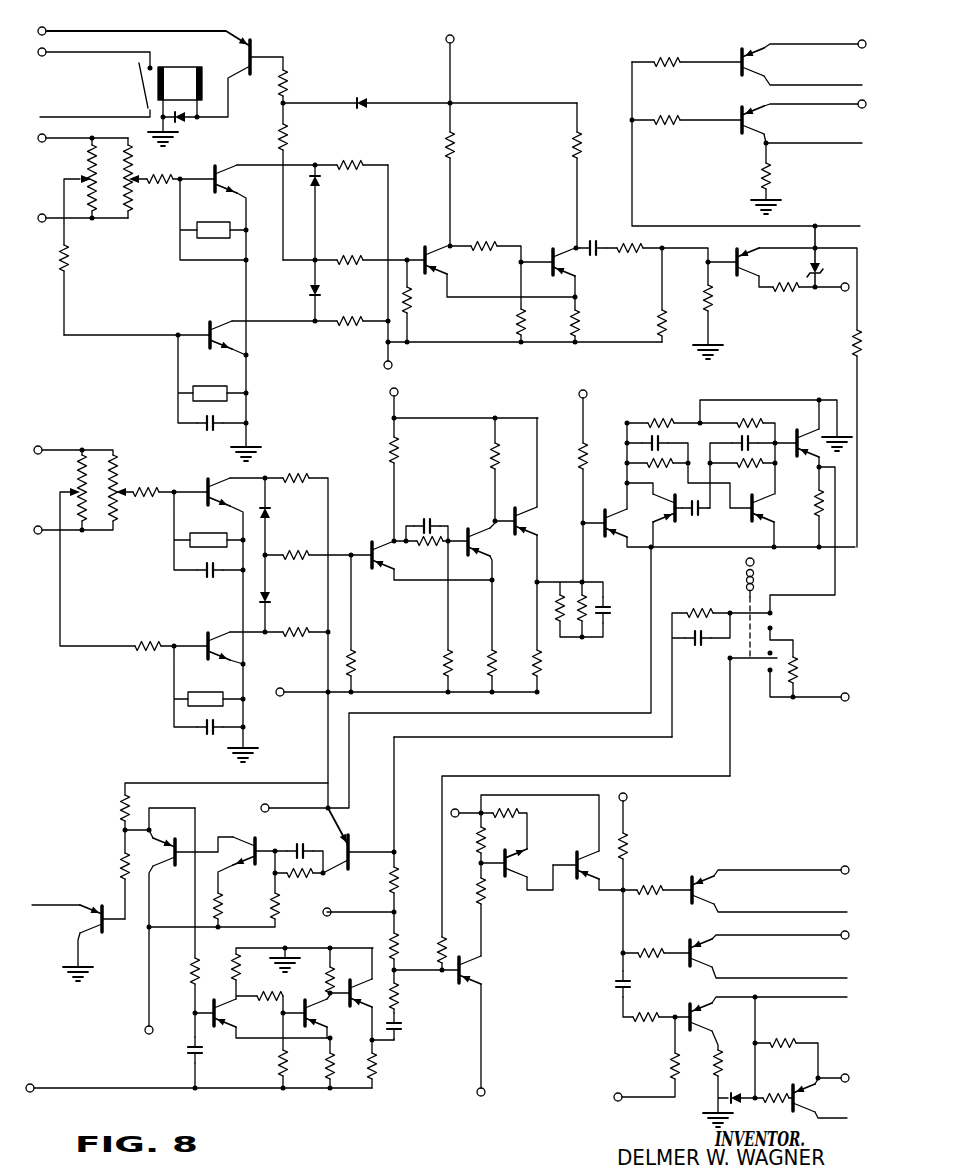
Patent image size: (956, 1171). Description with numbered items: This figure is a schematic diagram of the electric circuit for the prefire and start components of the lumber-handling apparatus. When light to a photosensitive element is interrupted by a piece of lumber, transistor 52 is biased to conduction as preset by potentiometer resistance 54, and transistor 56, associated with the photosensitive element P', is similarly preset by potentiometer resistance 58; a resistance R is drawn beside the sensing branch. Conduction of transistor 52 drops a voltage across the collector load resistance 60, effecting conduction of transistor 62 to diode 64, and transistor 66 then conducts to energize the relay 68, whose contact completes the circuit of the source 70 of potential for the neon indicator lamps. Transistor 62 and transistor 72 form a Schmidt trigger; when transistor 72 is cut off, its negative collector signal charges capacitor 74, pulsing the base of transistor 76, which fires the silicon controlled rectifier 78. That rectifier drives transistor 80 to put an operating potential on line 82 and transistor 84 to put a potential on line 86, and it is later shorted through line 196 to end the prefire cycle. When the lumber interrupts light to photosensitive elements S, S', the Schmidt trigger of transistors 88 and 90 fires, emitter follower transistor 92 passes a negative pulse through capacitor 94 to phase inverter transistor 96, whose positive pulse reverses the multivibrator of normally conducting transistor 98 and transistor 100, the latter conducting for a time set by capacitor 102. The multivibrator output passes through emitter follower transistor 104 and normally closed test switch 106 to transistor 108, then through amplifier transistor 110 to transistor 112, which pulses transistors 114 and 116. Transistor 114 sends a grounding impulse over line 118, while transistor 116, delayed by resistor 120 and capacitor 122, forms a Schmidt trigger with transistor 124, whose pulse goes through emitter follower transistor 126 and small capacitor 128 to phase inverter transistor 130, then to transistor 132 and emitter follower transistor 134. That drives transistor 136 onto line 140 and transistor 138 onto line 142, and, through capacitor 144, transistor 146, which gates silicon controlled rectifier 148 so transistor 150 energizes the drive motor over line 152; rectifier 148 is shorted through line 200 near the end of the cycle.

The transistor 52 is at (208, 333).
The potentiometer resistance 54 is at (83, 173).
The transistor 56 is at (210, 175).
The potentiometer resistance 58 is at (137, 189).
The collector load resistance 60 is at (345, 326).
The transistor 62 is at (421, 252).
The diode 64 is at (307, 291).
The transistor 66 is at (255, 44).
The relay 68 is at (175, 106).
The source of potential 70 is at (45, 57).
The transistor 72 is at (549, 254).
The capacitor 74 is at (592, 236).
The transistor 76 is at (771, 303).
The silicon controlled rectifier 78 is at (803, 266).
The transistor 80 is at (738, 56).
The line 82 is at (828, 84).
The transistor 84 is at (737, 127).
The line 86 is at (828, 143).
The transistor 88 is at (367, 549).
The transistor 90 is at (463, 533).
The emitter follower transistor 92 is at (513, 510).
The capacitor 94 is at (611, 613).
The phase inverter transistor 96 is at (603, 517).
The transistor 98 is at (760, 508).
The transistor 100 is at (672, 508).
The capacitor 102 is at (695, 515).
The emitter follower transistor 104 is at (795, 434).
The test switch 106 is at (775, 618).
The transistor 108 is at (353, 847).
The amplifier transistor 110 is at (258, 838).
The transistor 112 is at (191, 878).
The transistor 114 is at (106, 933).
The transistor 116 is at (203, 1032).
The line 118 is at (45, 905).
The resistor 120 is at (192, 971).
The capacitor 122 is at (185, 1050).
The transistor 124 is at (302, 1003).
The emitter follower transistor 126 is at (352, 1005).
The capacitor 128 is at (403, 1027).
The transistor 130 is at (467, 969).
The transistor 132 is at (506, 878).
The emitter follower transistor 134 is at (577, 880).
The transistor 136 is at (687, 879).
The transistor 138 is at (687, 948).
The line 140 is at (810, 915).
The line 142 is at (817, 978).
The capacitor 144 is at (612, 983).
The transistor 146 is at (687, 1012).
The silicon controlled rectifier 148 is at (733, 1090).
The transistor 150 is at (790, 1090).
The line 152 is at (838, 1110).
The line 196 is at (850, 227).
The line 200 is at (838, 998).
The photosensitive element P' is at (214, 221).
The reference resistor R is at (207, 391).
The photosensitive element S' is at (219, 613).
The photosensitive element S is at (219, 697).